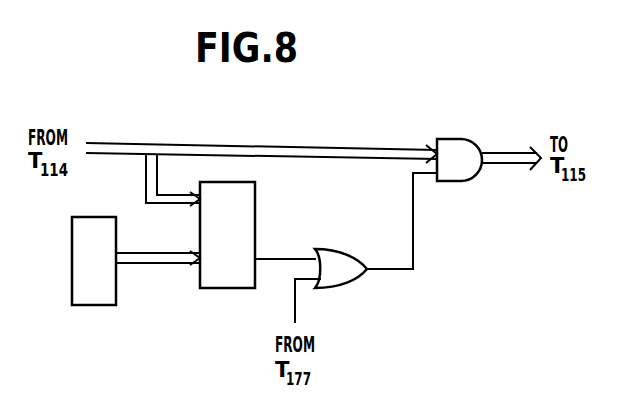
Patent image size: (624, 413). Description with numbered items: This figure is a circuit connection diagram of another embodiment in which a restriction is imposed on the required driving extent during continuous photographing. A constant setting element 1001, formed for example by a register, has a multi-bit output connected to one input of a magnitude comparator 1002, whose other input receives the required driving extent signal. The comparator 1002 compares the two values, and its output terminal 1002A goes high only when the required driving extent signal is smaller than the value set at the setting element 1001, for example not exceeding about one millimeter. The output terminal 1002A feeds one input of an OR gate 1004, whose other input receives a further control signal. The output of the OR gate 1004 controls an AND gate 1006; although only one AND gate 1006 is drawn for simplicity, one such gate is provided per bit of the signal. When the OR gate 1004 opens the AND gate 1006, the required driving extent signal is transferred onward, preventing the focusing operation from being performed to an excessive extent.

The constant setting element 1001 is at (92, 298).
The magnitude comparator 1002 is at (255, 209).
The output terminal of the comparator 1002A is at (255, 253).
The OR gate 1004 is at (350, 278).
The AND gate 1006 is at (450, 140).